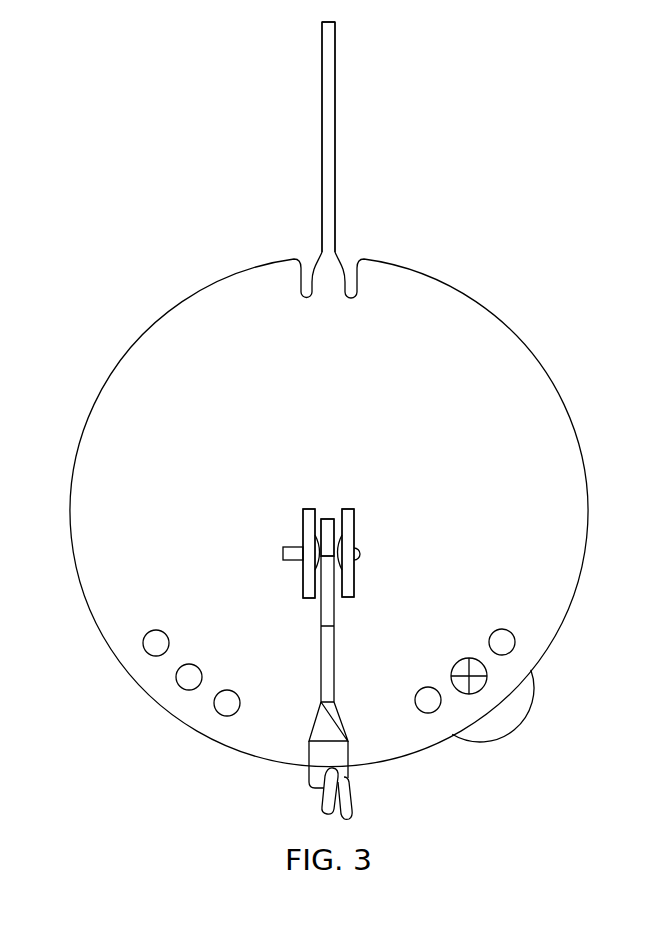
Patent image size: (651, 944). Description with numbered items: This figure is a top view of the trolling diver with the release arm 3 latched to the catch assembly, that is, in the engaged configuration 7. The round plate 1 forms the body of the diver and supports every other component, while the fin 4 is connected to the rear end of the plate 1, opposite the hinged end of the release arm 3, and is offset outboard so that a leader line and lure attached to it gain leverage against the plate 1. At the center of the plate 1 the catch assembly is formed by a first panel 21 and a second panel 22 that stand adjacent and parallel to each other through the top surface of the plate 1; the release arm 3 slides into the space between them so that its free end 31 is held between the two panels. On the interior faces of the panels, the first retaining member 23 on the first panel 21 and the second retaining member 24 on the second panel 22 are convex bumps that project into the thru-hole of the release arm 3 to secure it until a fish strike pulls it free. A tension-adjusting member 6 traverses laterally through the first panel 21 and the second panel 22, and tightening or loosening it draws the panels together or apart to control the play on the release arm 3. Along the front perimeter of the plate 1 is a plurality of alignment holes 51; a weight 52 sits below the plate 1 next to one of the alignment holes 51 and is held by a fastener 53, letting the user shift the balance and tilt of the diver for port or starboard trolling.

The plate 1 is at (116, 388).
The release arm 3 is at (347, 693).
The fin 4 is at (328, 85).
The tension-adjusting member 6 is at (293, 552).
The engaged configuration 7 is at (367, 459).
The first panel 21 is at (309, 590).
The second panel 22 is at (349, 590).
The first retaining member 23 is at (318, 548).
The second retaining member 24 is at (339, 548).
The free end 31 is at (329, 519).
The plurality of alignment holes 51 is at (137, 621).
The weight 52 is at (498, 727).
The fastener 53 is at (457, 664).